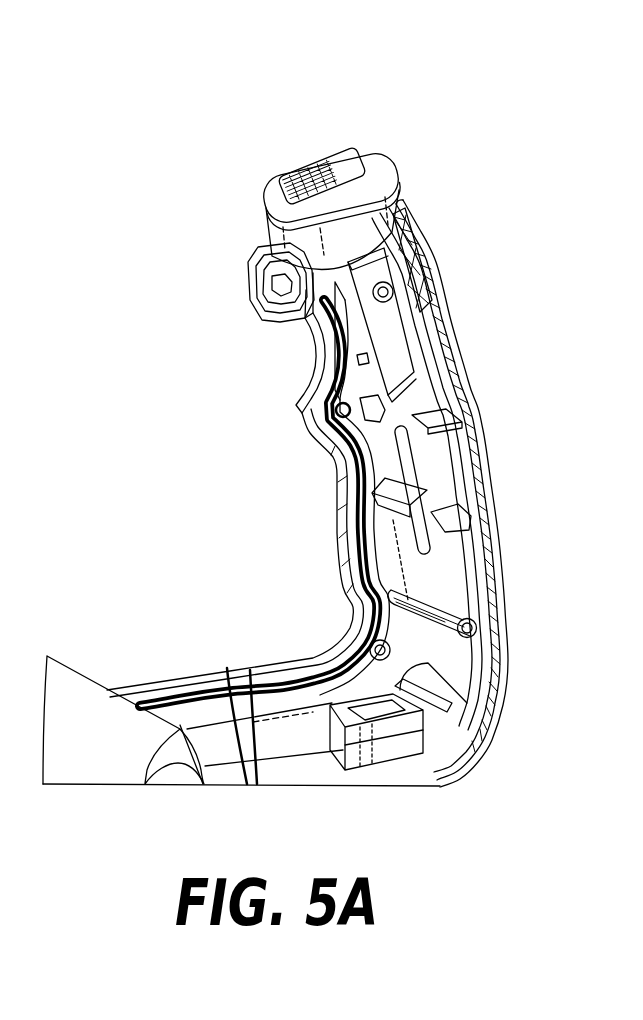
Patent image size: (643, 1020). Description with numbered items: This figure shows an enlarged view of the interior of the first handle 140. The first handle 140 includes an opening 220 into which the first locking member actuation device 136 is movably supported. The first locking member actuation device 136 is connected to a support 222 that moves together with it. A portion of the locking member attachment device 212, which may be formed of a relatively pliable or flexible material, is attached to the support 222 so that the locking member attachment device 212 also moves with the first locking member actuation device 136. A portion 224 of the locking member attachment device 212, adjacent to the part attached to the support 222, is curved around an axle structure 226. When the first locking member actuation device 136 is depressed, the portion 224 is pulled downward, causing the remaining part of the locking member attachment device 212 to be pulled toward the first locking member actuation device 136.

The first locking member actuation device 136 is at (298, 163).
The first handle 140 is at (478, 382).
The locking member attachment device 212 is at (470, 560).
The opening 220 is at (407, 193).
The support 222 is at (400, 340).
The portion of the locking member attachment device 224 is at (328, 275).
The axle structure 226 is at (368, 297).